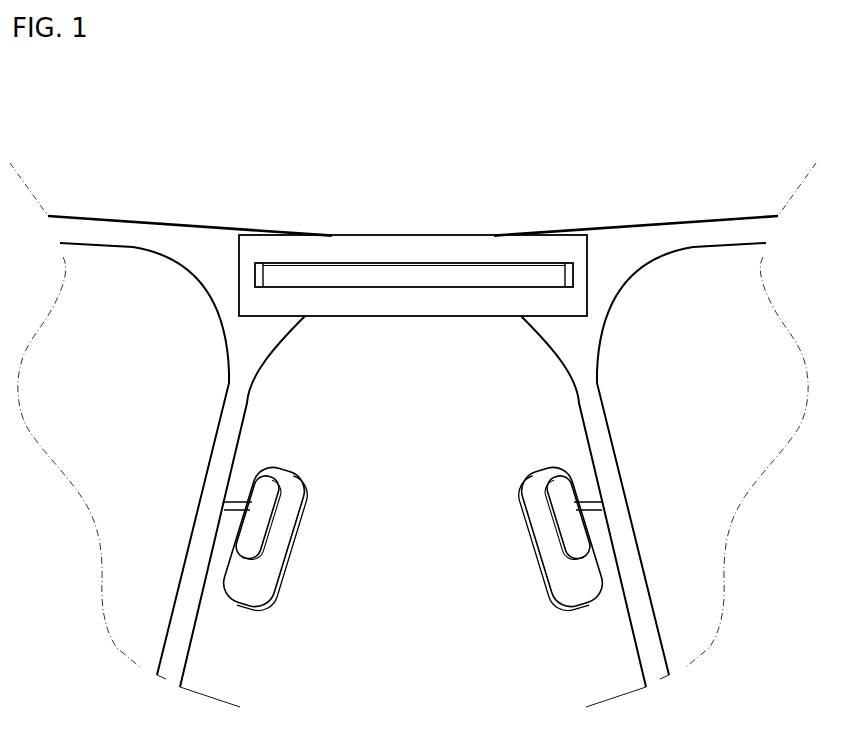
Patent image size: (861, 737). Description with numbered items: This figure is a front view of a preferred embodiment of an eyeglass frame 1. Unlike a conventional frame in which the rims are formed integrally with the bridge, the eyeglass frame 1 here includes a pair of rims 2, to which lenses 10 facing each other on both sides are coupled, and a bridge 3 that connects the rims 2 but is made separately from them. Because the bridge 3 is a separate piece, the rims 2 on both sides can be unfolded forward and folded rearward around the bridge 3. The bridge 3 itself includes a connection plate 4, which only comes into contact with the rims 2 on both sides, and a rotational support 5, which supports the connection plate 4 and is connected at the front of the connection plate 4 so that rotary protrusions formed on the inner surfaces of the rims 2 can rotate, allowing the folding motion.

The eyeglass frame 1 is at (416, 371).
The rims 2 is at (83, 233).
The bridge 3 is at (413, 198).
The connection plate 4 is at (312, 250).
The rotational support 5 is at (392, 280).
The lenses 10 is at (137, 290).